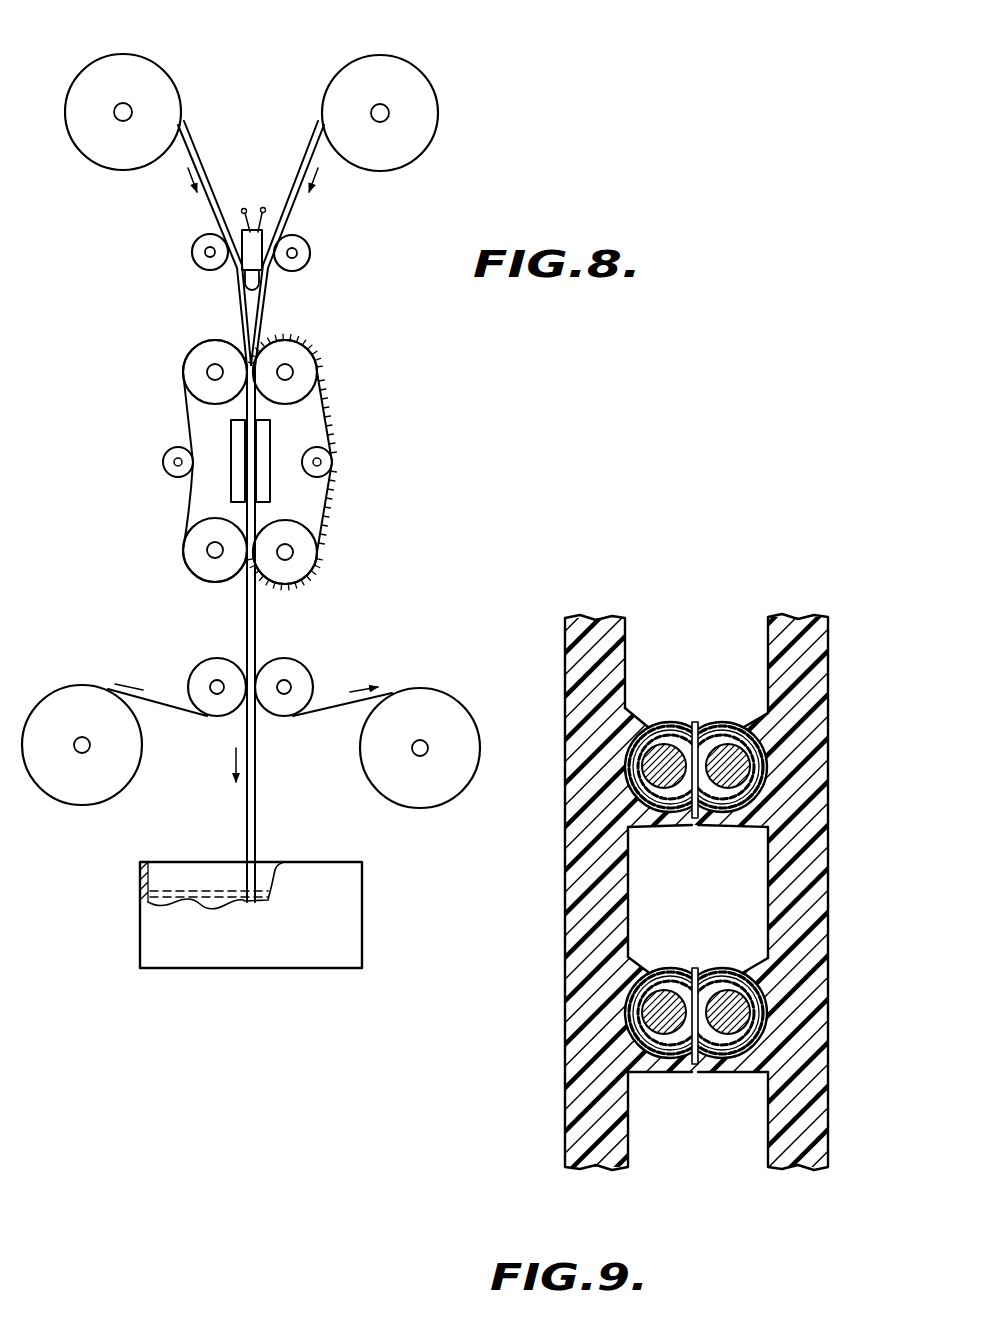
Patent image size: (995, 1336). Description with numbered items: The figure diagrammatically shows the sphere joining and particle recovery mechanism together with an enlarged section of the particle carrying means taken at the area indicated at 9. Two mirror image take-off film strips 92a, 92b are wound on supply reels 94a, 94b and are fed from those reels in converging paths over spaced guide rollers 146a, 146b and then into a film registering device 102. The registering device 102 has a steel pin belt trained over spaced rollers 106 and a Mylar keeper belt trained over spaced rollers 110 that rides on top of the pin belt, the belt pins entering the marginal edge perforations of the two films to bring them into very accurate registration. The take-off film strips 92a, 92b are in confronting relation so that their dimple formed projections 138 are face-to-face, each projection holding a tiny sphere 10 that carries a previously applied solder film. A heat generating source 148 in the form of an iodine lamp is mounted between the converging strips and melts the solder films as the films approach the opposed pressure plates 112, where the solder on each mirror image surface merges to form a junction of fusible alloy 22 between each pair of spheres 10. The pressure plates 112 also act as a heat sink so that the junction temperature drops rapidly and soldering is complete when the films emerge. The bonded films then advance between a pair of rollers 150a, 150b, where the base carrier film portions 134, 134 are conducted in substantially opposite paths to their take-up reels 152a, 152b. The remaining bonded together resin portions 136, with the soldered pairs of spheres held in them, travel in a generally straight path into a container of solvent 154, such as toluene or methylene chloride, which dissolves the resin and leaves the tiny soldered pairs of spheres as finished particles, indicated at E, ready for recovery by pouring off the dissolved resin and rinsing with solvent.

In FIG. 8, the supply reel 94a is at (137, 58).
In FIG. 8, the supply reel 94b is at (406, 77).
In FIG. 8, the take-off film strip 92a is at (196, 134).
In FIG. 8, the take-off film strip 92b is at (295, 173).
In FIG. 8, the heat generating source 148 is at (257, 241).
In FIG. 8, the guide roller 146a is at (201, 262).
In FIG. 8, the guide roller 146b is at (298, 256).
In FIG. 8, the spaced rollers 110 is at (200, 355).
In FIG. 8, the spaced rollers 106 is at (303, 352).
In FIG. 8, the film registering device 102 is at (337, 433).
In FIG. 8, the pressure plates 112 is at (233, 489).
In FIG. 8, the roller 150a is at (203, 669).
In FIG. 8, the roller 150b is at (288, 664).
In FIG. 8, the base carrier film portion 134 is at (184, 714).
In FIG. 8, the take-up reel 152a is at (88, 795).
In FIG. 8, the take-up reel 152b is at (433, 793).
In FIG. 8, the area indicated for sectional view 9 is at (266, 803).
In FIG. 8, the container of solvent 154 is at (240, 953).
In FIG. 8, the assembled cable E is at (158, 985).
In FIG. 9, the bonded together resin portions 136 is at (773, 641).
In FIG. 9, the dimple formed projections 138 is at (741, 718).
In FIG. 9, the sphere 10 is at (653, 814).
In FIG. 9, the fusible alloy 22 is at (697, 820).